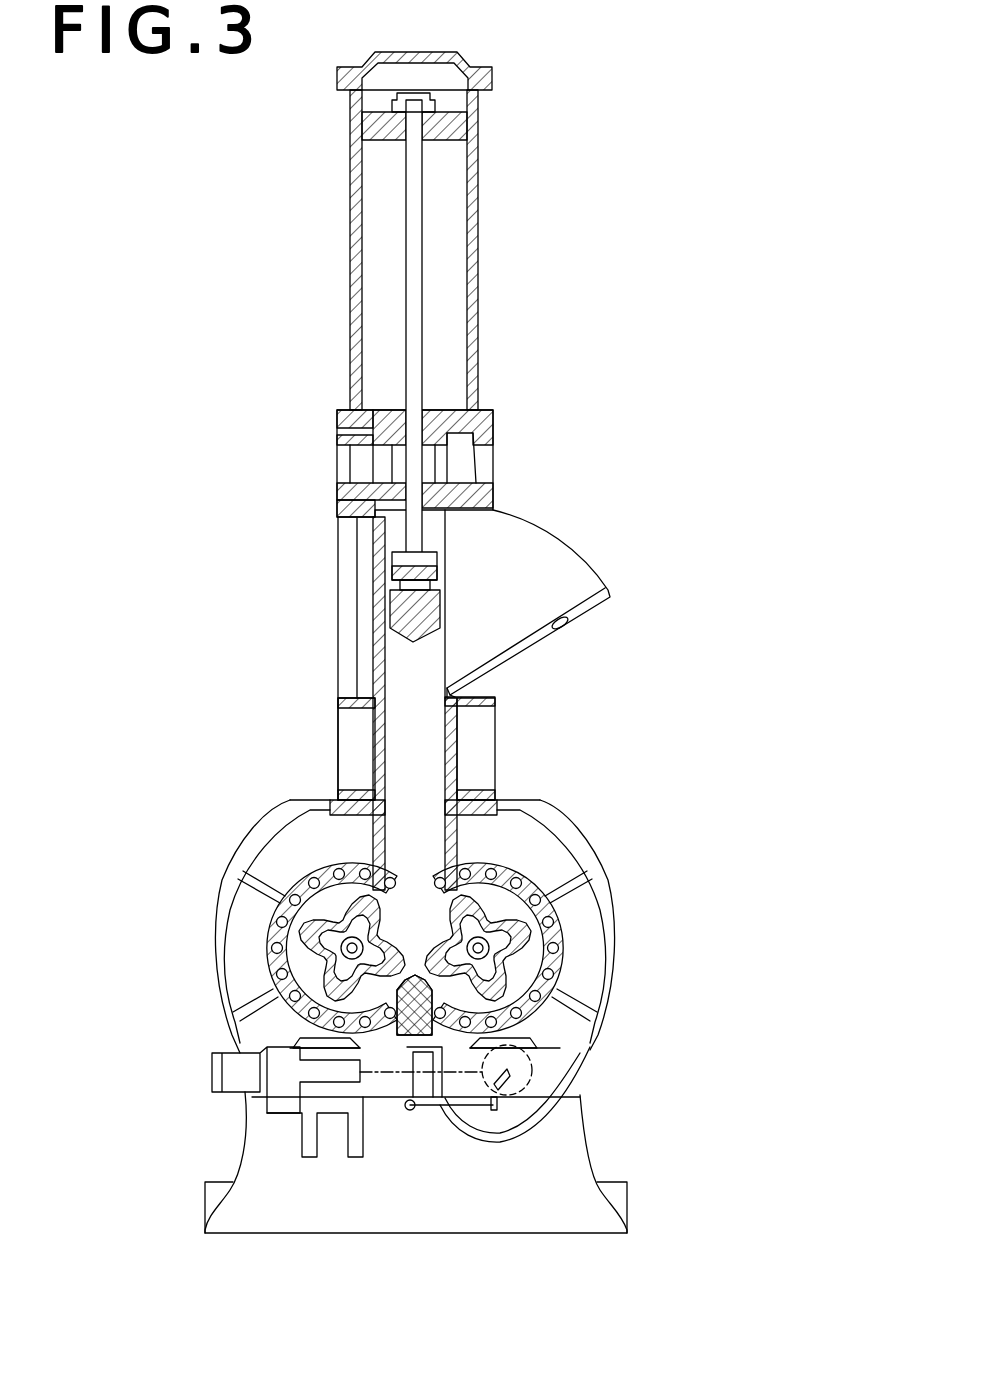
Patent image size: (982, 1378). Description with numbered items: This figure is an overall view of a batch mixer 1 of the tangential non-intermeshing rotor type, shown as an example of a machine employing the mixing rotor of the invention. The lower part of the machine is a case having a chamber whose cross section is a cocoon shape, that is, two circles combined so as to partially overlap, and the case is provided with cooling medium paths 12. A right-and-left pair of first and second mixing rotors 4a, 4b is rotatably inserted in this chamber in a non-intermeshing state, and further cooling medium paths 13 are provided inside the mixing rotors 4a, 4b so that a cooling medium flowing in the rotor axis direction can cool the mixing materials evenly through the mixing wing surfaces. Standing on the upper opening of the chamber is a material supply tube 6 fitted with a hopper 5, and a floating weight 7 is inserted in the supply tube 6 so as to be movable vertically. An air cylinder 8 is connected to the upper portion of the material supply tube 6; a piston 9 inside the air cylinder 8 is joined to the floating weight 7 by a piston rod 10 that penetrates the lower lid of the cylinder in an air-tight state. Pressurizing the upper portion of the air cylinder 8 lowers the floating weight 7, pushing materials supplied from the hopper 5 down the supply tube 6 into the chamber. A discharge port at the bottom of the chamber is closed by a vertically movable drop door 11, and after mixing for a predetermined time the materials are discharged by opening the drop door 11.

The batch mixer 1 is at (644, 256).
The first mixing rotor 4a is at (278, 968).
The second mixing rotor 4b is at (560, 968).
The hopper 5 is at (530, 535).
The material supply tube 6 is at (455, 745).
The floating weight 7 is at (413, 644).
The air cylinder 8 is at (478, 210).
The piston 9 is at (453, 125).
The piston rod 10 is at (413, 297).
The drop door 11 is at (400, 1040).
The cooling medium paths 12 is at (303, 880).
The cooling medium paths 13 is at (310, 963).